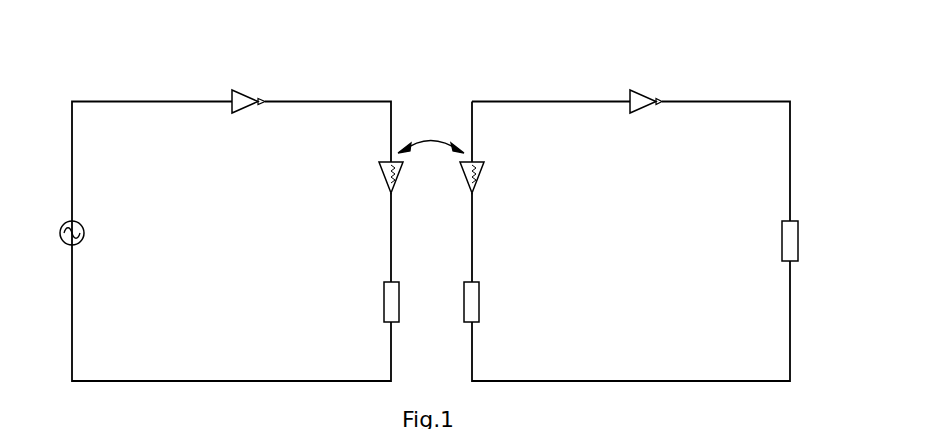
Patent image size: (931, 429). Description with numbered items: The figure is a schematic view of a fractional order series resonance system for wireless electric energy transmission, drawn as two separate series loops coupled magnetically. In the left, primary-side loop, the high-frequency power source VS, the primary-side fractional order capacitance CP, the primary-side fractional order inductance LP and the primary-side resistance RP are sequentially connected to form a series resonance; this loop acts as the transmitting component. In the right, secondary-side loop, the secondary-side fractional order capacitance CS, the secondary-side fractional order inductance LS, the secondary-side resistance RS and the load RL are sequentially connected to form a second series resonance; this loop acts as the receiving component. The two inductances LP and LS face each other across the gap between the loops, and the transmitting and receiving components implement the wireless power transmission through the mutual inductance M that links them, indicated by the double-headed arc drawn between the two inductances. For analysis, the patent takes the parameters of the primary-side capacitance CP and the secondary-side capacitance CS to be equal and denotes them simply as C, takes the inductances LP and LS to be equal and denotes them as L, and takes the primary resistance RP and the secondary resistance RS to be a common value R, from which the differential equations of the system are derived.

The high-frequency power source VS is at (50, 226).
The primary-side fractional order capacitance CP is at (245, 81).
The primary-side fractional order inductance LP is at (372, 172).
The mutual inductance M is at (431, 131).
The secondary-side fractional order inductance LS is at (492, 172).
The secondary-side fractional order capacitance CS is at (642, 81).
The primary-side resistance RP is at (368, 302).
The secondary-side resistance RS is at (493, 302).
The load RL is at (811, 243).